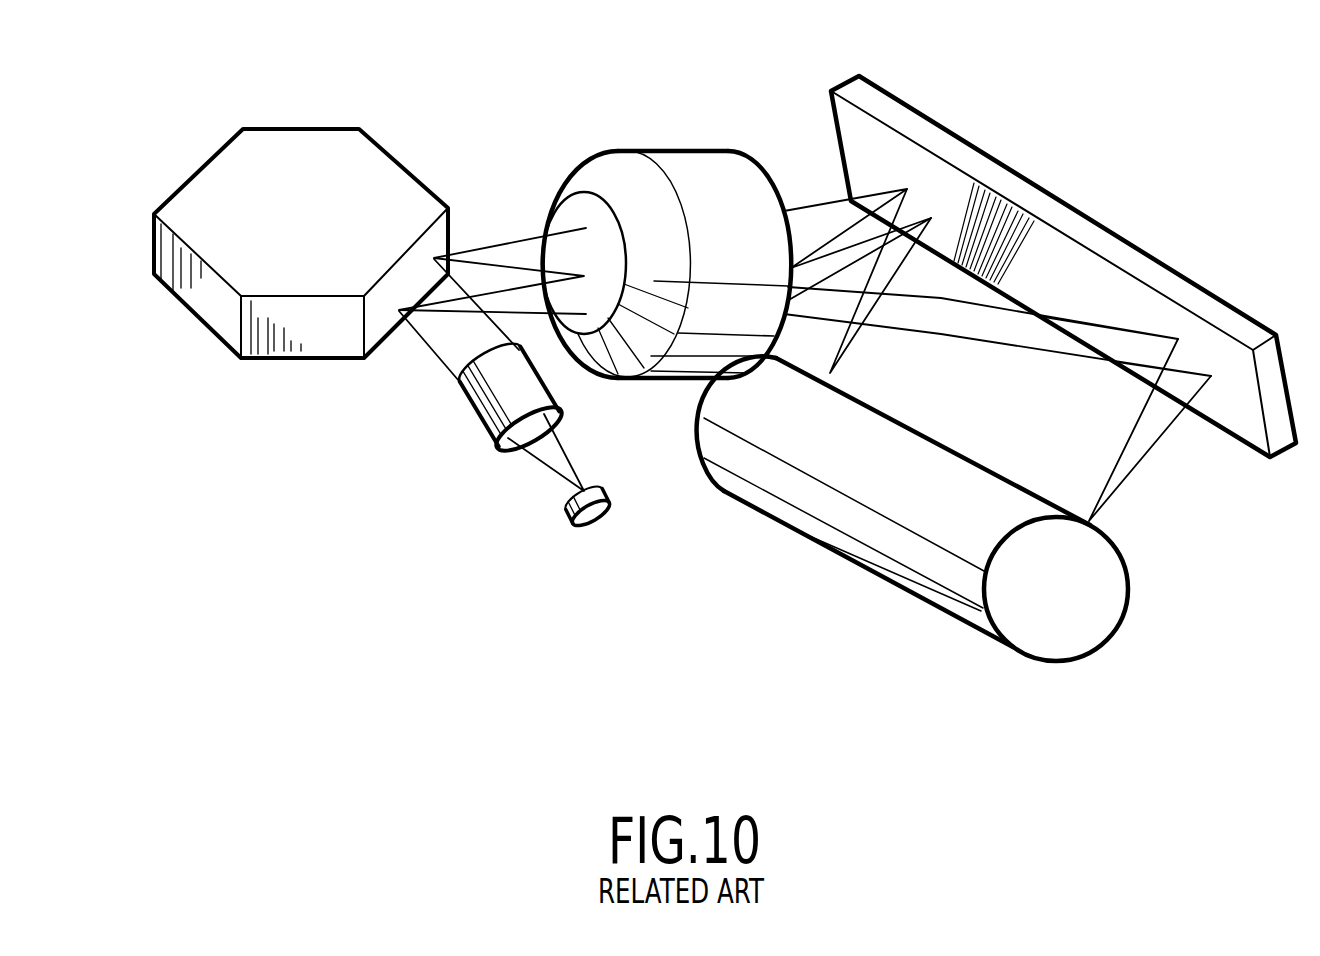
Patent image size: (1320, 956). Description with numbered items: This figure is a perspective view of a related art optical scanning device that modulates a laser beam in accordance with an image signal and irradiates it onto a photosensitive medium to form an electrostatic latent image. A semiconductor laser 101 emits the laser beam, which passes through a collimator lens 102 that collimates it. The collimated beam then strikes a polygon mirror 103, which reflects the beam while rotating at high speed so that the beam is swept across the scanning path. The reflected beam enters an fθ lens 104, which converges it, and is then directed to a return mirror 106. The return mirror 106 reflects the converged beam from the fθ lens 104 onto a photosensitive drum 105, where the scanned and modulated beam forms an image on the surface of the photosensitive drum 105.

The semiconductor laser 101 is at (568, 520).
The collimator lens 102 is at (473, 411).
The polygon mirror 103 is at (371, 175).
The fθ lens 104 is at (703, 181).
The photosensitive drum 105 is at (1100, 610).
The return mirror 106 is at (1054, 201).